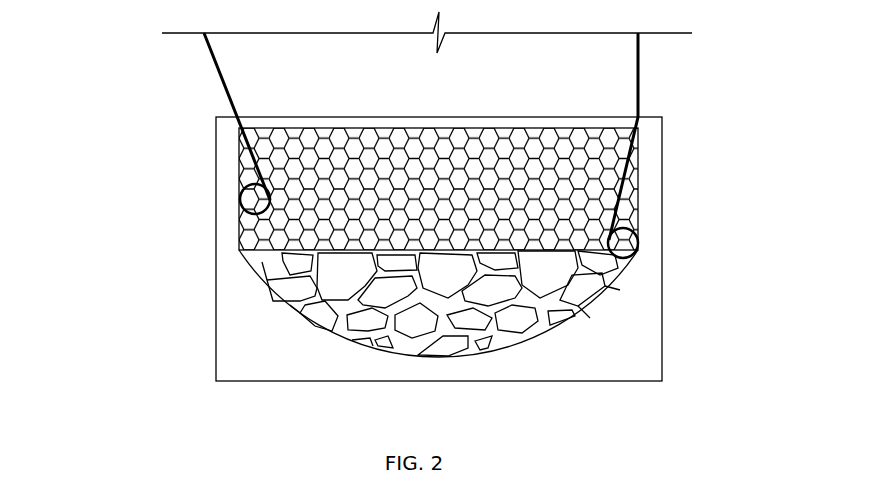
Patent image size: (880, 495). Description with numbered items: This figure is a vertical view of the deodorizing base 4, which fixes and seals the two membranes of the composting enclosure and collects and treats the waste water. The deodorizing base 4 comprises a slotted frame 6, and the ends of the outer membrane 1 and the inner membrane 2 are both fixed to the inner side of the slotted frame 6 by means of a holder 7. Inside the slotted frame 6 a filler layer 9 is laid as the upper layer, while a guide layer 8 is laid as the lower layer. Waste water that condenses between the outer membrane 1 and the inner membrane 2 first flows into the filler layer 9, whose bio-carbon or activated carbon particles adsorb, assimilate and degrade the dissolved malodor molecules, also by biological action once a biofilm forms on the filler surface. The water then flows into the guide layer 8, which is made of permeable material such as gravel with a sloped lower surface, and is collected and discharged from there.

The outer membrane 1 is at (638, 76).
The inner membrane 2 is at (220, 75).
The deodorizing base 4 is at (223, 342).
The slotted frame 6 is at (216, 198).
The holder 7 is at (623, 243).
The guide layer 8 is at (478, 323).
The filler layer 9 is at (638, 163).